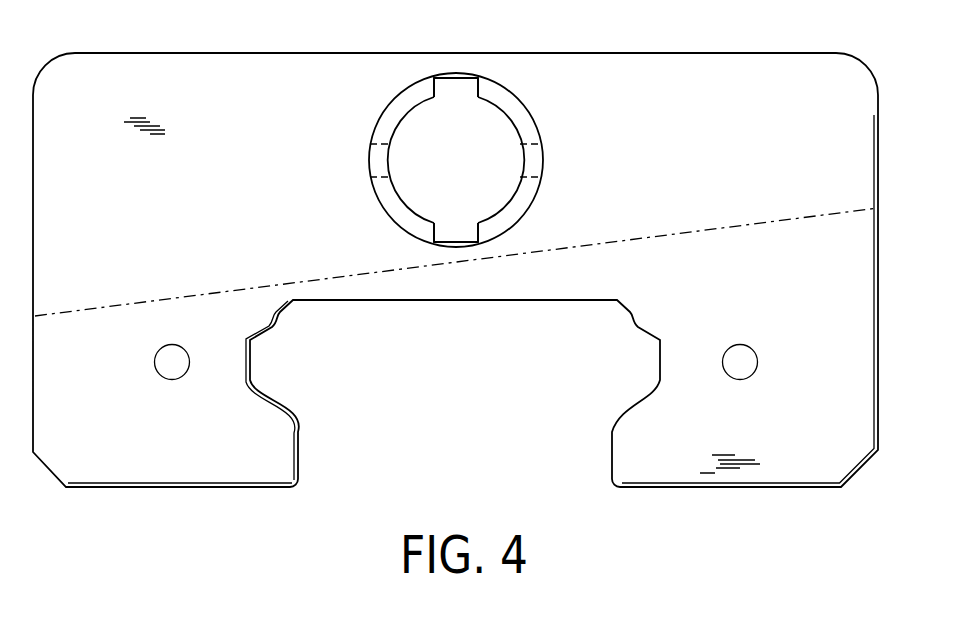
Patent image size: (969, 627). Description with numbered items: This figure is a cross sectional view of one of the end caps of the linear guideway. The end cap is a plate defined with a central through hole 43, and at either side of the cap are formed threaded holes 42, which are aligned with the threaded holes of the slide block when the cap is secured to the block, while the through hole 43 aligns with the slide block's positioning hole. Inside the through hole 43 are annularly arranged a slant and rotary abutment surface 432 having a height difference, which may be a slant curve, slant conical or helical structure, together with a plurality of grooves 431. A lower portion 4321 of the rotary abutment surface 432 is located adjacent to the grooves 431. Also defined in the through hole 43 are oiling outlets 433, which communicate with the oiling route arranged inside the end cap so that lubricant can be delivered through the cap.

The threaded holes 42 is at (168, 363).
The through hole 43 is at (430, 140).
The grooves 431 is at (455, 87).
The rotary abutment surface 432 is at (522, 202).
The lower portion 4321 is at (488, 87).
The oiling outlets 433 is at (533, 143).